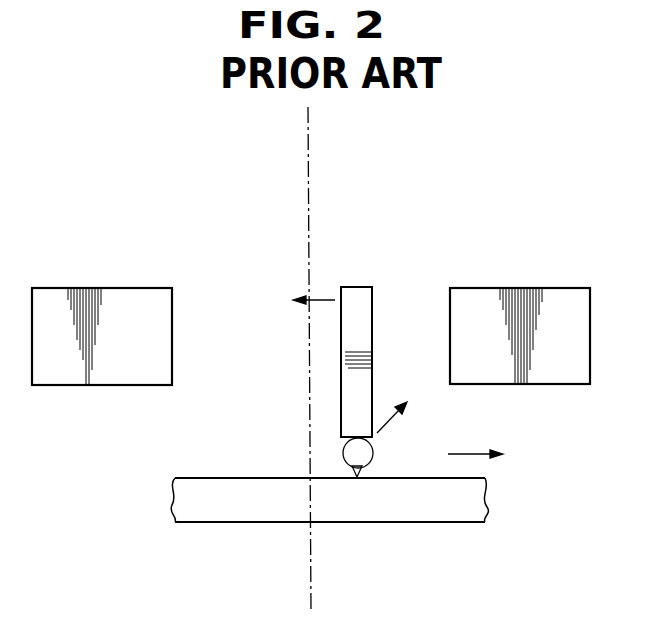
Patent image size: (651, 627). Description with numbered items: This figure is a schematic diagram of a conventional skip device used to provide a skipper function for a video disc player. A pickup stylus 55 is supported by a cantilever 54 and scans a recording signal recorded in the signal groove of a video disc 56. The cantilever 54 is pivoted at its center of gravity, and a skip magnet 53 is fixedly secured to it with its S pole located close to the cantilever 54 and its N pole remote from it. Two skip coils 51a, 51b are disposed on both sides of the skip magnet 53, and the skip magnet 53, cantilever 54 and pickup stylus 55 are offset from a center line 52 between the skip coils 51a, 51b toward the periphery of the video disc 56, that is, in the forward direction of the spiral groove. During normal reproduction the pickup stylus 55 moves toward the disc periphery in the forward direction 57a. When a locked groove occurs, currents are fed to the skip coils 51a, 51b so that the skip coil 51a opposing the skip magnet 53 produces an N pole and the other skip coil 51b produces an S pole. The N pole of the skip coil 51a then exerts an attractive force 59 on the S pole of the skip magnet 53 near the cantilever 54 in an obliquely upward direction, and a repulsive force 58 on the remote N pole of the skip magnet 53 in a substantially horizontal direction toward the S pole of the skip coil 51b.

The skip coil 51a is at (565, 288).
The skip coil 51b is at (112, 288).
The center line 52 is at (309, 133).
The skip magnet 53 is at (368, 287).
The cantilever 54 is at (344, 453).
The pickup stylus 55 is at (347, 478).
The video disc 56 is at (455, 513).
The forward direction 57a is at (492, 458).
The repulsive force 58 is at (326, 300).
The attractive force 59 is at (377, 433).